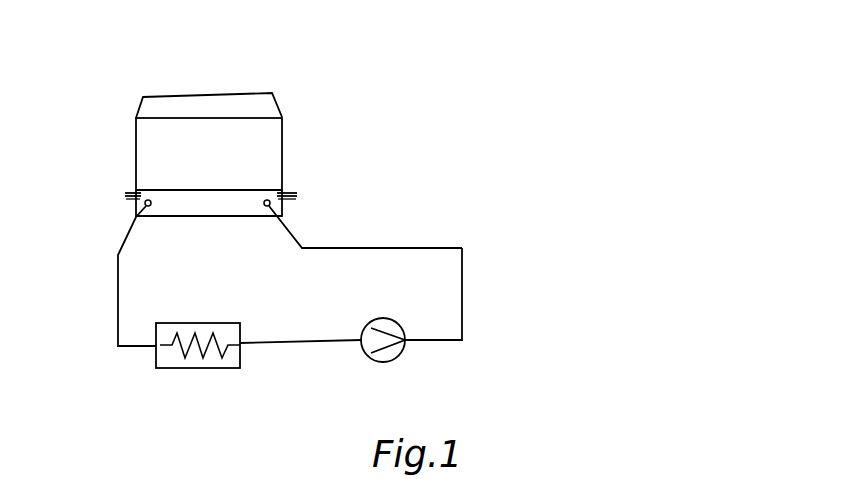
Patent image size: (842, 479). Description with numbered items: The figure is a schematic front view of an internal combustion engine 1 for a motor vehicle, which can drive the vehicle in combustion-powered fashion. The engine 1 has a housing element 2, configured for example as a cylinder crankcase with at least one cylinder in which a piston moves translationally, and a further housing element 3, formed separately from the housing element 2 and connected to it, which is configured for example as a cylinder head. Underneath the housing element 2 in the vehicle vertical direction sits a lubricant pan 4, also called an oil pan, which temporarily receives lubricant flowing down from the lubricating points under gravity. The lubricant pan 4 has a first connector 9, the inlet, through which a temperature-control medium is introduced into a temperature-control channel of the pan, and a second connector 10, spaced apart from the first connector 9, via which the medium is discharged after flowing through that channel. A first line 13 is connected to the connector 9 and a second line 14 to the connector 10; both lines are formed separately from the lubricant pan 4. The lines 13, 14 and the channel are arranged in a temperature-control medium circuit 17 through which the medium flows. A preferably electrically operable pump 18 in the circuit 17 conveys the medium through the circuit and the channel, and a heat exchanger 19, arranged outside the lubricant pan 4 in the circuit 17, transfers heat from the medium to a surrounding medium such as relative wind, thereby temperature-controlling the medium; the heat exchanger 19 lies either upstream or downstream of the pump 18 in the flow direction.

The internal combustion engine 1 is at (273, 93).
The housing element 2 is at (282, 148).
The further housing element 3 is at (278, 110).
The lubricant pan 4 is at (193, 218).
The first connector 9 is at (287, 203).
The second connector 10 is at (135, 193).
The first line 13 is at (298, 242).
The second line 14 is at (118, 267).
The temperature-control medium circuit 17 is at (462, 248).
The pump 18 is at (382, 363).
The heat exchanger 19 is at (198, 370).